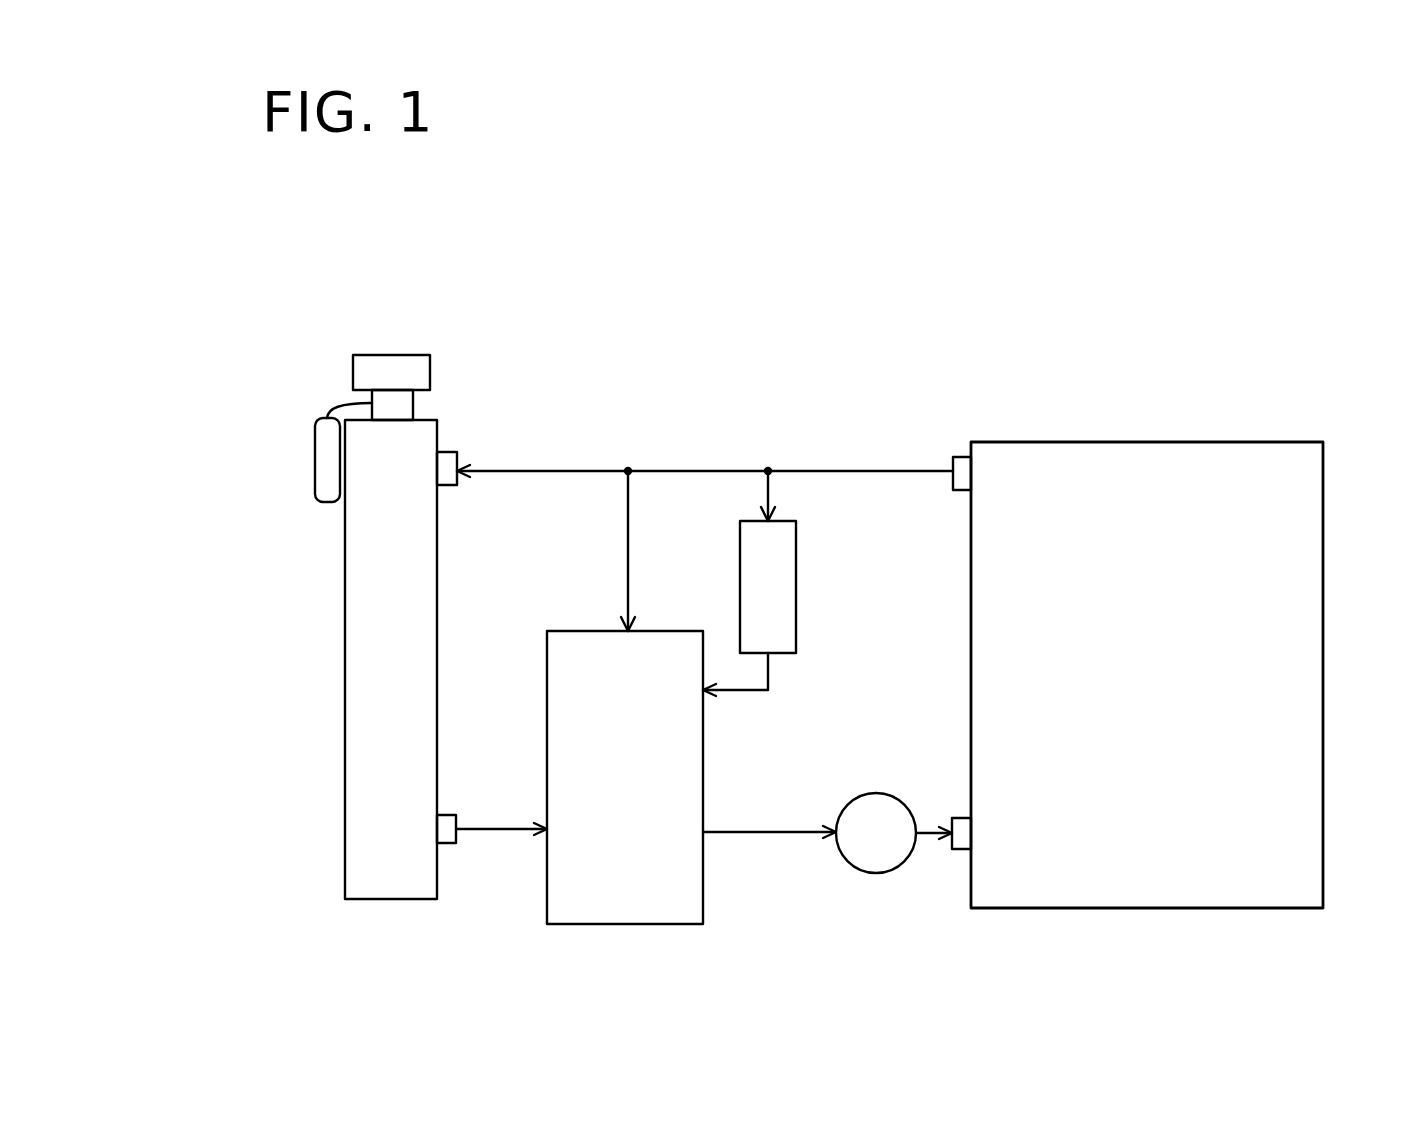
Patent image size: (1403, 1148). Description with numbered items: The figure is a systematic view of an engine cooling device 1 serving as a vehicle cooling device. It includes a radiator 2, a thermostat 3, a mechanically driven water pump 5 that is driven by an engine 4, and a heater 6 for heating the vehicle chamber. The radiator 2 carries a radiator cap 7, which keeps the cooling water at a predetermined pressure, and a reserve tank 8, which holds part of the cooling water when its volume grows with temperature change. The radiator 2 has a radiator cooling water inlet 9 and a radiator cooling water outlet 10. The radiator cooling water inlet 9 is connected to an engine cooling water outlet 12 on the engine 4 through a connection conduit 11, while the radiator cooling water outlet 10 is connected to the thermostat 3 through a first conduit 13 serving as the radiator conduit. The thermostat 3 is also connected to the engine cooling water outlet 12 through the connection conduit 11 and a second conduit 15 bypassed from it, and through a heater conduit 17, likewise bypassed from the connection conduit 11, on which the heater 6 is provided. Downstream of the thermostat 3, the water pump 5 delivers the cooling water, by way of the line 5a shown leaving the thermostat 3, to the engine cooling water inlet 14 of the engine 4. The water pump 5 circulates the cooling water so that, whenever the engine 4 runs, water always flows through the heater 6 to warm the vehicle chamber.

The engine cooling device 1 is at (518, 345).
The radiator 2 is at (345, 621).
The thermostat 3 is at (703, 873).
The engine 4 is at (1120, 450).
The water pump 5 is at (880, 871).
The purge passage 5a is at (757, 828).
The heater 6 is at (796, 583).
The radiator cap 7 is at (395, 355).
The reserve tank 8 is at (315, 458).
The radiator cooling water inlet 9 is at (448, 452).
The radiator cooling water outlet 10 is at (455, 843).
The connection conduit 11 is at (848, 470).
The engine cooling water outlet 12 is at (963, 457).
The first conduit 13 is at (505, 832).
The engine cooling water inlet 14 is at (962, 849).
The second conduit 15 is at (629, 577).
The heater conduit 17 is at (769, 495).